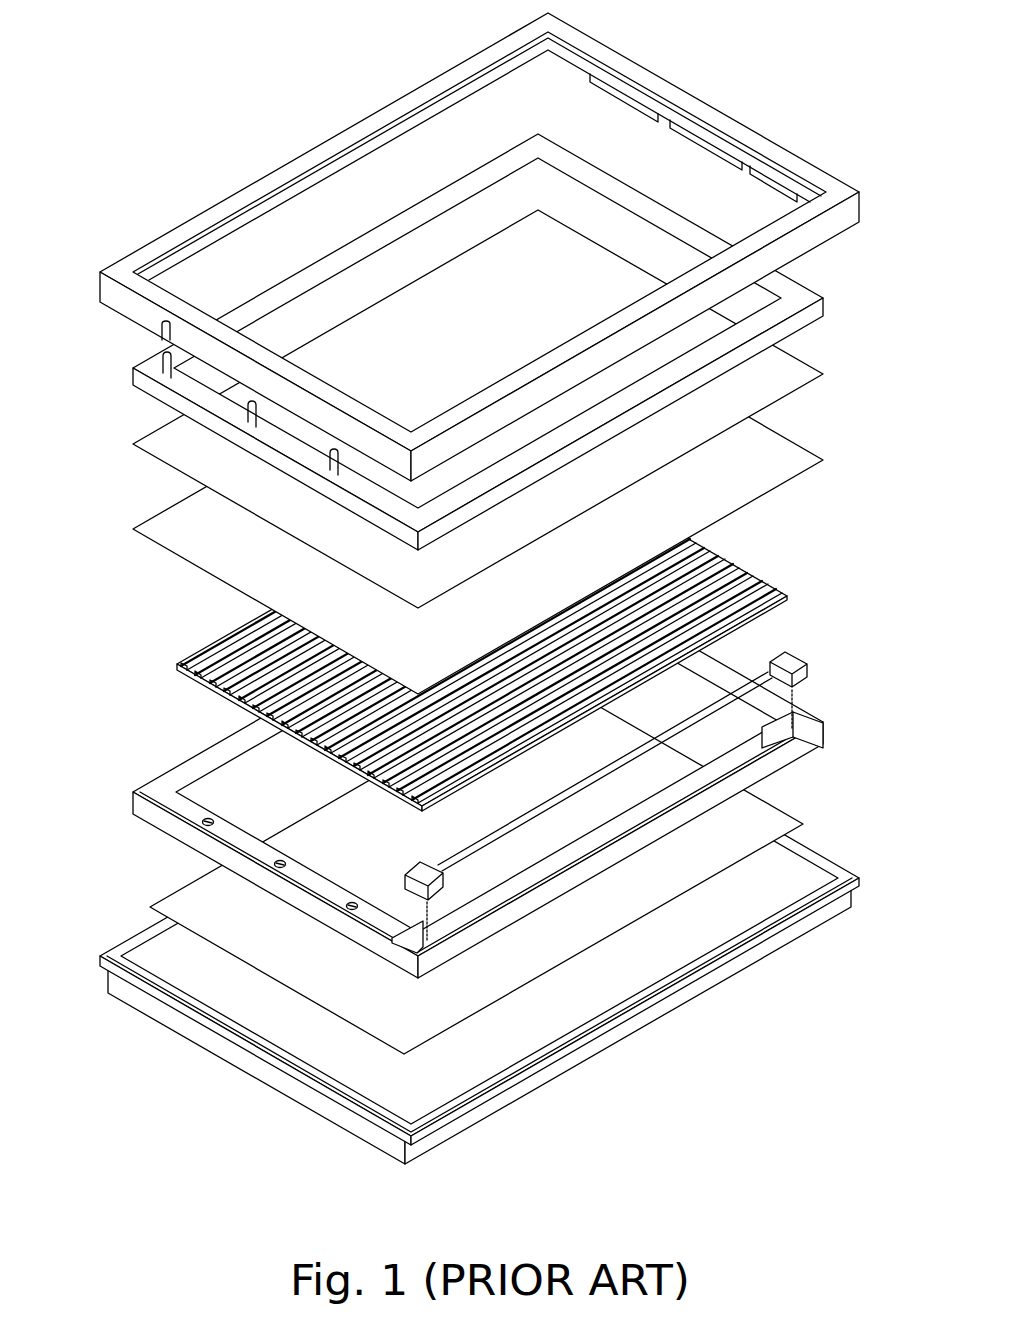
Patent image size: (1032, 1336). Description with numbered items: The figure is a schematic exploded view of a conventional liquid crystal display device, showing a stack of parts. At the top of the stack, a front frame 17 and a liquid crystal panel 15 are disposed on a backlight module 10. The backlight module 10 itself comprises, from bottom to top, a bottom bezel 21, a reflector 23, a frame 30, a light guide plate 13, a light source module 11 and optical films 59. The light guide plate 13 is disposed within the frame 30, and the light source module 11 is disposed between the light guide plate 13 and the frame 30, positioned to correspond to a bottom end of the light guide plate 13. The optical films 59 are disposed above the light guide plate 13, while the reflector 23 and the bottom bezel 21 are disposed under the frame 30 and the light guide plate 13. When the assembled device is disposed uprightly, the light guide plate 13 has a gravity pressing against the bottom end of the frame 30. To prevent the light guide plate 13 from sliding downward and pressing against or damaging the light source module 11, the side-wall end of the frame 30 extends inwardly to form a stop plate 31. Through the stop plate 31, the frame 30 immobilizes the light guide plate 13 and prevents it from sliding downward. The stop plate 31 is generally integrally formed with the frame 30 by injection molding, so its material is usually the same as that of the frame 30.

The backlight module 10 is at (471, 588).
The light source module 11 is at (790, 684).
The light guide plate 13 is at (760, 582).
The liquid crystal panel 15 is at (805, 297).
The front frame 17 is at (655, 78).
The bottom bezel 21 is at (802, 907).
The reflector 23 is at (772, 817).
The frame 30 is at (173, 802).
The stop plate 31 is at (792, 735).
The optical films 59 is at (832, 343).